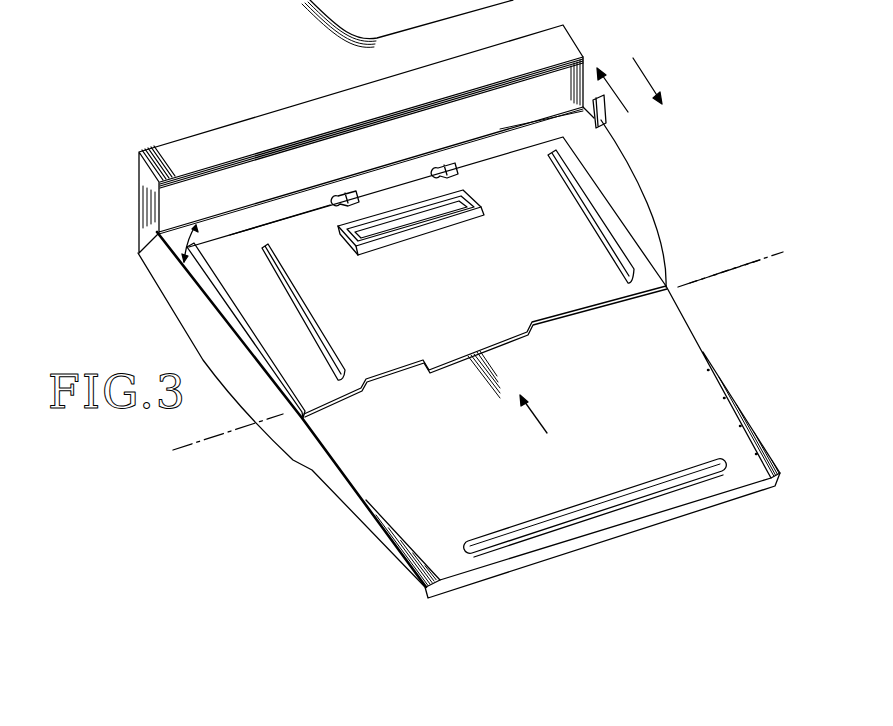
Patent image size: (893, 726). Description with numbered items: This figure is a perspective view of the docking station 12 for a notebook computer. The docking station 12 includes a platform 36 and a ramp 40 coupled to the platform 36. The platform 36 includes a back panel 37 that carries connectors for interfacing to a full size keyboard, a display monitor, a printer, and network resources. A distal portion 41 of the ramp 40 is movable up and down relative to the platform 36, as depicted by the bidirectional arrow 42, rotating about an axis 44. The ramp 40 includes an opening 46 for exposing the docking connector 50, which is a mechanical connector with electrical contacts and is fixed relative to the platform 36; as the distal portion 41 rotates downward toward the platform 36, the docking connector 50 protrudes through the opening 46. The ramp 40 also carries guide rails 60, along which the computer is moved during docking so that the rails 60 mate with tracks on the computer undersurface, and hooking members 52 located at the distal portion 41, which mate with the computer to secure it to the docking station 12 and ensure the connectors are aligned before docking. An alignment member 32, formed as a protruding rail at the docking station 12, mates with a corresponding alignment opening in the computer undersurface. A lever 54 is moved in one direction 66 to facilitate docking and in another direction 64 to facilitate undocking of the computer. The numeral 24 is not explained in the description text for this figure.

The docking station 12 is at (730, 326).
The direction arrow 24 is at (540, 423).
The alignment member 32 is at (573, 508).
The platform 36 is at (712, 362).
The back panel 37 is at (223, 127).
The ramp 40 is at (485, 290).
The distal portion 41 is at (263, 223).
The bidirectional arrow 42 is at (138, 252).
The axis 44 is at (737, 264).
The opening 46 is at (477, 202).
The docking connector 50 is at (364, 252).
The hooking members 52 is at (355, 195).
The lever 54 is at (607, 116).
The guide rails 60 is at (330, 336).
The direction 64 is at (648, 75).
The direction 66 is at (612, 92).